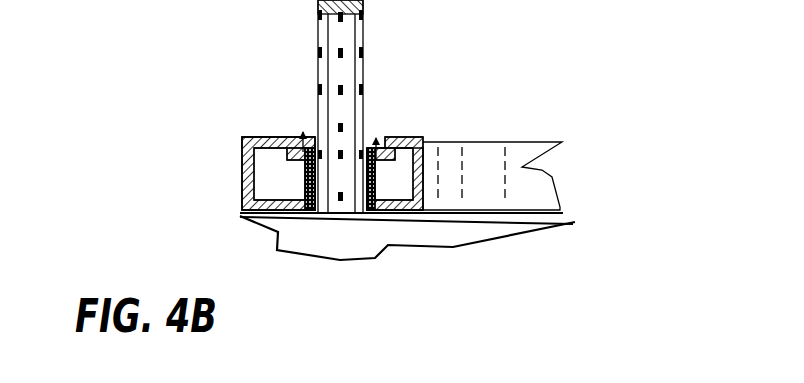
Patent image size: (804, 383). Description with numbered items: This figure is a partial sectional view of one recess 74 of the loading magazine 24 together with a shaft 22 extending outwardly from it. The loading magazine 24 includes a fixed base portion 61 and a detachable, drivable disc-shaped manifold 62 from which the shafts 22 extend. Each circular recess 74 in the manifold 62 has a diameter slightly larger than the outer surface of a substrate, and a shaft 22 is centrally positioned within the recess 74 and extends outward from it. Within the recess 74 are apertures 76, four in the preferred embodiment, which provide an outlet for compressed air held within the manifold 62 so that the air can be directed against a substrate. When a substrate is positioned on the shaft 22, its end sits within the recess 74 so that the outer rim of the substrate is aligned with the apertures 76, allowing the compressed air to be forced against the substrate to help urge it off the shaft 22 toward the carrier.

The shaft 22 is at (363, 42).
The loading magazine 24 is at (530, 66).
The base portion 61 is at (460, 233).
The manifold 62 is at (262, 163).
The recess 74 is at (303, 128).
The aperture 76 is at (298, 172).